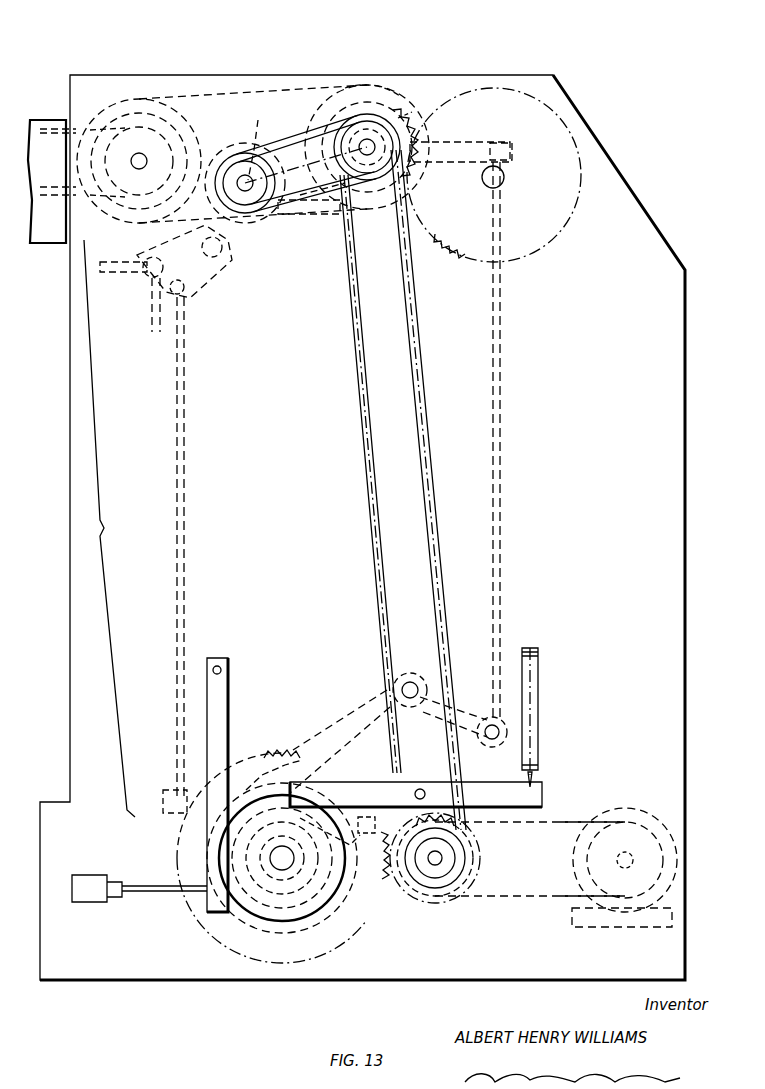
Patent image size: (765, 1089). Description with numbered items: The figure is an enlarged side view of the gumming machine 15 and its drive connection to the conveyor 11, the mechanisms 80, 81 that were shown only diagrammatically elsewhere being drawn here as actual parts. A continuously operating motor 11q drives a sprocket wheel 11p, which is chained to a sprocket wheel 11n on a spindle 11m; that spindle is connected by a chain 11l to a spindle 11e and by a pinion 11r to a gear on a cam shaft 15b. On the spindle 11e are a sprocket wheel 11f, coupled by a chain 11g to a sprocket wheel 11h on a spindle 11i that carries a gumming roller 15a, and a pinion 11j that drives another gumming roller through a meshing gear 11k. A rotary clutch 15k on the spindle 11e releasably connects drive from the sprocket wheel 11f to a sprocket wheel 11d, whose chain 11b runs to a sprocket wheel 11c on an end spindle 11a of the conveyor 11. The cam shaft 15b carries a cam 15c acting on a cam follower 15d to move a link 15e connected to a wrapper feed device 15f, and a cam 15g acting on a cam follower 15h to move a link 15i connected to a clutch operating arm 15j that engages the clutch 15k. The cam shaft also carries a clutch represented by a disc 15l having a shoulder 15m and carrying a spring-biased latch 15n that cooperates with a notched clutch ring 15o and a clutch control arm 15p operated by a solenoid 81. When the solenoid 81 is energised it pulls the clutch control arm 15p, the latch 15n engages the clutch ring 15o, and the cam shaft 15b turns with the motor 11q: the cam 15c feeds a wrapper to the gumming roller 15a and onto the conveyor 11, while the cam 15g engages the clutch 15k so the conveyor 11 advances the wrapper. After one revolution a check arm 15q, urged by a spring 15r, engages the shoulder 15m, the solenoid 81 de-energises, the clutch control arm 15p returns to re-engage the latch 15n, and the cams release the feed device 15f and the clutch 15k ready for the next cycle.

The conveyor 11 is at (52, 147).
The end spindle 11a is at (140, 153).
The chain 11b is at (239, 93).
The sprocket wheel 11c is at (196, 134).
The sprocket wheel 11d is at (315, 127).
The spindle 11e is at (369, 145).
The sprocket wheel 11f is at (325, 187).
The chain 11g is at (305, 200).
The sprocket wheel 11h is at (280, 214).
The spindle 11i is at (252, 232).
The pinion 11j is at (370, 103).
The meshing gear 11k is at (509, 88).
The chain 11l is at (356, 344).
The spindle 11m is at (438, 865).
The sprocket wheel 11n is at (414, 903).
The sprocket wheel 11p is at (628, 822).
The motor 11q is at (580, 830).
The pinion 11r is at (409, 903).
The gumming machine 15 is at (362, 527).
The gumming roller 15a is at (258, 132).
The cam shaft 15b is at (282, 865).
The cam 15c is at (296, 905).
The cam follower 15d is at (173, 807).
The link 15e is at (187, 541).
The wrapper feed device 15f is at (150, 277).
The cam 15g is at (334, 910).
The cam follower 15h is at (352, 722).
The link 15i is at (505, 523).
The clutch operating arm 15j is at (470, 140).
The rotary clutch 15k is at (405, 115).
The disc 15l is at (248, 788).
The shoulder 15m is at (293, 797).
The latch 15n is at (217, 927).
The notched clutch ring 15o is at (232, 852).
The clutch control arm 15p is at (222, 682).
The check arm 15q is at (482, 795).
The spring 15r is at (540, 712).
The mechanism 80 is at (94, 532).
The solenoid 81 is at (88, 890).